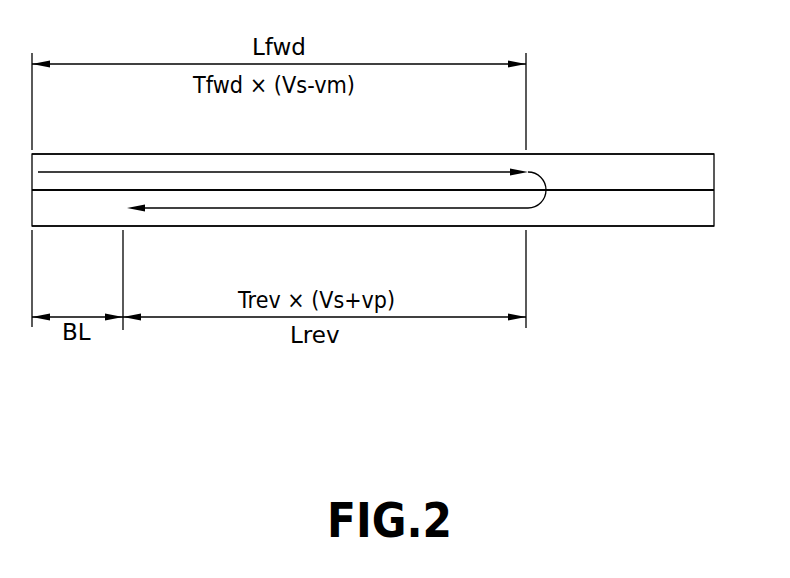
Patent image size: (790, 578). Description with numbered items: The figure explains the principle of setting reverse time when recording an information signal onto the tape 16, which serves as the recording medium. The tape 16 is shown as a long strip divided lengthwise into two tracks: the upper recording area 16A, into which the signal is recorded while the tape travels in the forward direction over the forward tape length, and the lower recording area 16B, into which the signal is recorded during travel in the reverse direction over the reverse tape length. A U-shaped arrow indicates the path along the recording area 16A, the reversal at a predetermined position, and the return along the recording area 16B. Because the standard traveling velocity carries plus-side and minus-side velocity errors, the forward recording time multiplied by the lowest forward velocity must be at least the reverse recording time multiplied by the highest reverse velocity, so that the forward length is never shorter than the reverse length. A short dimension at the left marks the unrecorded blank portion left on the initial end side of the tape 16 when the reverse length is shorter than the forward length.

The tape 16 is at (731, 147).
The recording area 16A is at (622, 168).
The recording area 16B is at (633, 208).